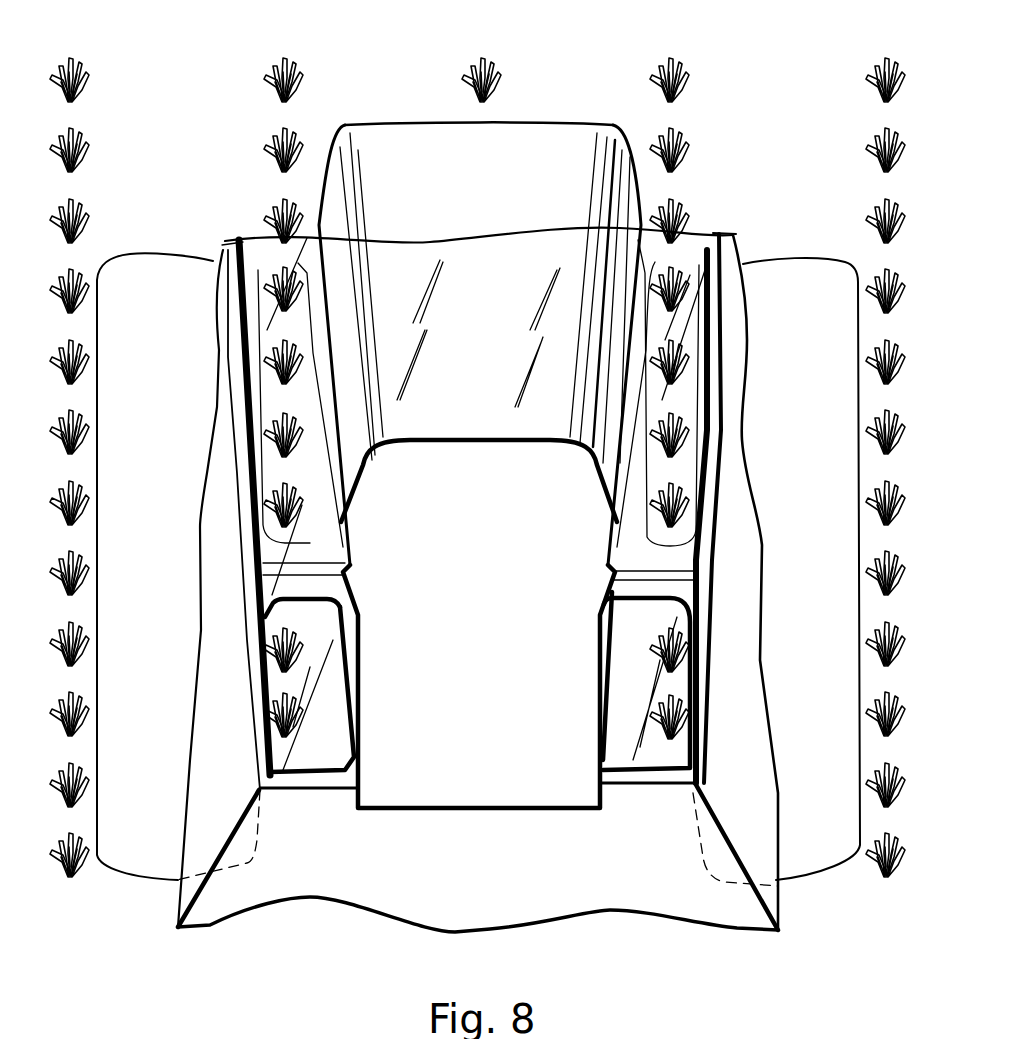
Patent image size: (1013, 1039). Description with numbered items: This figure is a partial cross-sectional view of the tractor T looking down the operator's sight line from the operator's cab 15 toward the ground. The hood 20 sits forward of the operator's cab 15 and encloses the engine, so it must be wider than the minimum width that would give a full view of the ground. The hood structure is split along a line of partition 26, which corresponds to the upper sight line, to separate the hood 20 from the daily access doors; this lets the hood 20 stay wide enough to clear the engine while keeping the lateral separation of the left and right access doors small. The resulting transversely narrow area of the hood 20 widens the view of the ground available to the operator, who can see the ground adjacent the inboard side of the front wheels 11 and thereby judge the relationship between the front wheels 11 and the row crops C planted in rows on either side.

The front wheels 11 is at (150, 870).
The operator's cab 15 is at (725, 915).
The hood 20 is at (512, 125).
The line of partition 26 is at (338, 605).
The row crops C is at (83, 80).
The tractor T is at (753, 184).